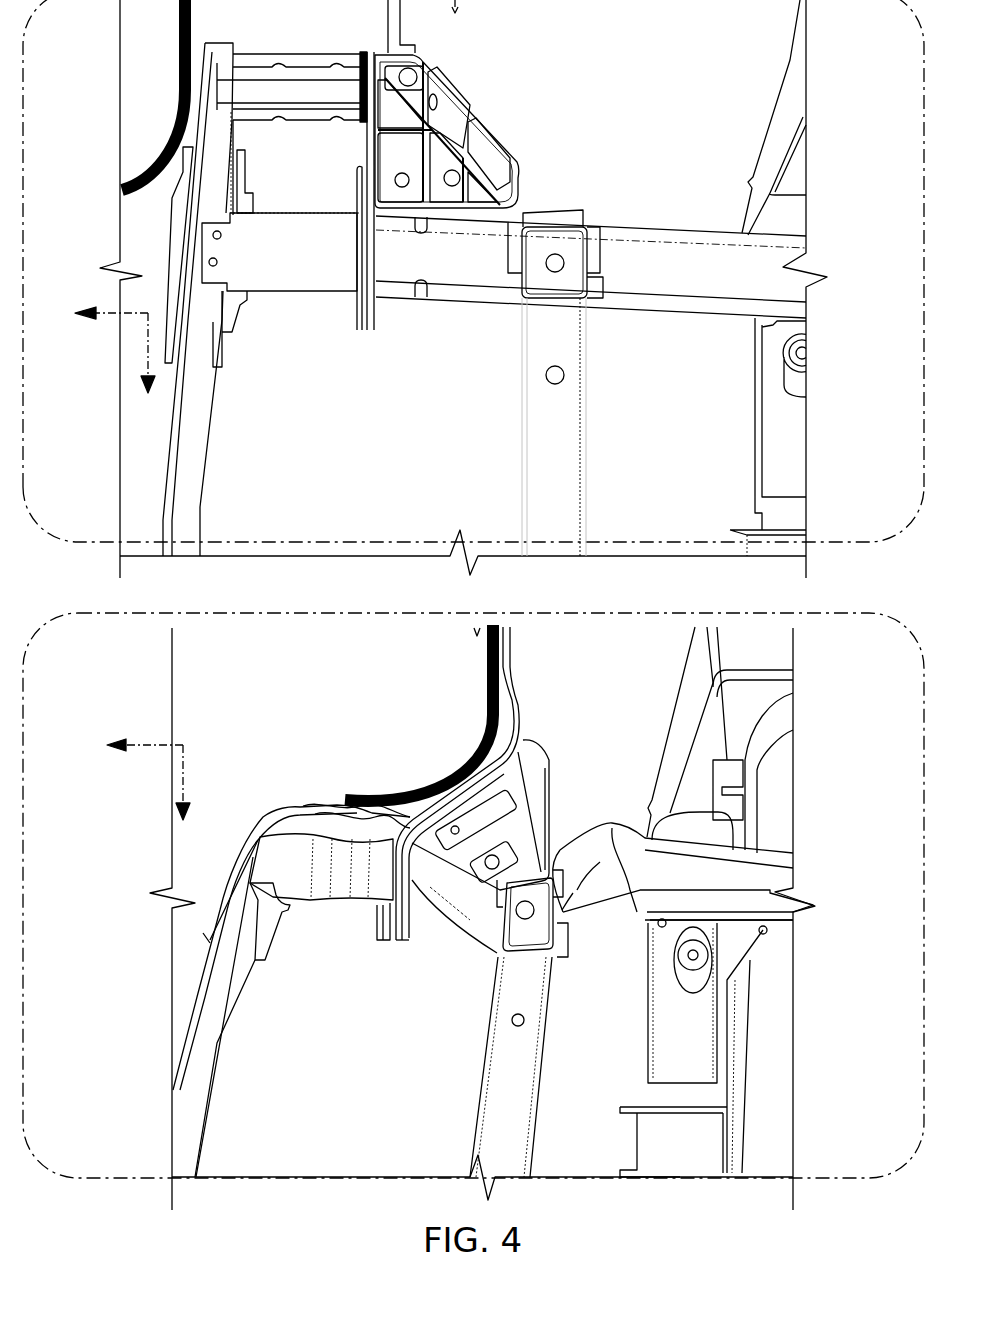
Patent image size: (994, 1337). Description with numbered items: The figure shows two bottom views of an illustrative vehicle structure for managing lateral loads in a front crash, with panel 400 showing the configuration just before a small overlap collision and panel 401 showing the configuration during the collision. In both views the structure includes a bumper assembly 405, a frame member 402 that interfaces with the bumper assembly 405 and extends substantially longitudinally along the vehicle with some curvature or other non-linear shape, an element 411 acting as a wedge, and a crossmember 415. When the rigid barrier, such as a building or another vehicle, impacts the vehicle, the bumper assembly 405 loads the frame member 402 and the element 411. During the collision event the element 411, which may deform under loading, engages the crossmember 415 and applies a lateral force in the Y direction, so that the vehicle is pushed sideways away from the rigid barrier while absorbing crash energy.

The panel 400 is at (904, 251).
The panel 401 is at (904, 907).
The frame member 402 is at (668, 313).
The bumper assembly 405 is at (290, 292).
The element 411 is at (518, 191).
The crossmember 415 is at (540, 390).